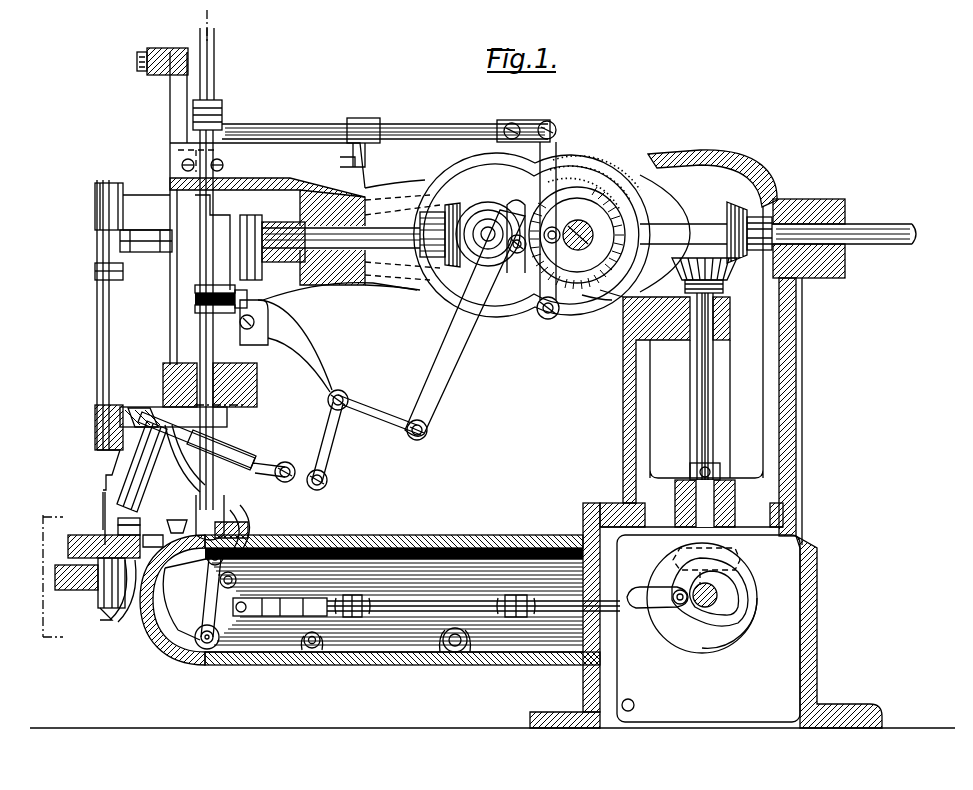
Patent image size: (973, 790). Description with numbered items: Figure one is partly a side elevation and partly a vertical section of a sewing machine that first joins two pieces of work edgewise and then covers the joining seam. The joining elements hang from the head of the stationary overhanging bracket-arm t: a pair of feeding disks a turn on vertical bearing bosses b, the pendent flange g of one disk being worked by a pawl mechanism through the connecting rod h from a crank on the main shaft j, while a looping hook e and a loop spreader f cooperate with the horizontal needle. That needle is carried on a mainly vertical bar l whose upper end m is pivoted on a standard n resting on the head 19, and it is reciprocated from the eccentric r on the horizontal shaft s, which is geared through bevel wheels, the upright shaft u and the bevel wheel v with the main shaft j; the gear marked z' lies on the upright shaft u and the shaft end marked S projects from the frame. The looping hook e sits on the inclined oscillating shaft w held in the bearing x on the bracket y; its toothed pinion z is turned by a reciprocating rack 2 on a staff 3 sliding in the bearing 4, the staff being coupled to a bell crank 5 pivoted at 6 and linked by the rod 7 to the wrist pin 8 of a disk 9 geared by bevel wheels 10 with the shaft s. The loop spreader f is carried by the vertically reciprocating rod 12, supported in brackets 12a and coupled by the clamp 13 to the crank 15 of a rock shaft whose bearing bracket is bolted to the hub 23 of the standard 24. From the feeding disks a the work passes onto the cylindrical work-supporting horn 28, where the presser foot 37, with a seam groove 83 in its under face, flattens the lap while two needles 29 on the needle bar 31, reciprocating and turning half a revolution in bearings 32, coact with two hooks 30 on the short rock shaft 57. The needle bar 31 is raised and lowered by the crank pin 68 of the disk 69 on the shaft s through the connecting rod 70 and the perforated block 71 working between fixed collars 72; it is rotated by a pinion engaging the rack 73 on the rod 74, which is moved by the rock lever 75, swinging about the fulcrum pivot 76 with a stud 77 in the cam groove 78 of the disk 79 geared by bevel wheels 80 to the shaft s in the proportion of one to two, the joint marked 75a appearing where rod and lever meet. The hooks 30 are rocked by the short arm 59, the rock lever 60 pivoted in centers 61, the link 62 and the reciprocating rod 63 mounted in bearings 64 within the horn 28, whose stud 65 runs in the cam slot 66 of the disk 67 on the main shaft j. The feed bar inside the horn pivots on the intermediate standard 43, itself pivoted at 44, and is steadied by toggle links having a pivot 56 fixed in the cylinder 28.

The reciprocating toothed rack 2 is at (95, 418).
The staff 3 is at (256, 459).
The bearing 4 is at (487, 267).
The bell crank 5 is at (343, 455).
The supporting pivot 6 is at (342, 394).
The rod 7 is at (447, 398).
The wrist pin 8 is at (514, 253).
The disk 9 is at (300, 285).
The bevel wheels 10 is at (447, 263).
The vertically reciprocating rod 12 is at (97, 352).
The brackets 12a is at (105, 193).
The clamp 13 is at (96, 275).
The crank 15 is at (165, 237).
The head 19 is at (100, 215).
The hub 23 is at (846, 270).
The stationary arm supporting standard 24 is at (802, 398).
The cylindrical work plate or work-supporting horn 28 is at (420, 536).
The vertically reciprocating needles 29 is at (218, 538).
The single thread chain stitch forming hooks 30 is at (246, 550).
The needle bar 31 is at (216, 63).
The bearings 32 is at (208, 197).
The presser foot 37 is at (179, 519).
The intermediate standard 43 is at (155, 539).
The pivot 44 is at (455, 655).
The pivot 56 is at (314, 652).
The short rock shaft 57 is at (168, 598).
The short arm 59 is at (237, 580).
The rock lever 60 is at (230, 604).
The centers 61 is at (207, 650).
The link 62 is at (262, 618).
The reciprocating rod 63 is at (428, 610).
The bearings 64 is at (355, 612).
The stud 65 is at (678, 602).
The cam slot 66 is at (738, 625).
The disk 67 is at (691, 624).
The crank pin 68 is at (235, 195).
The disk 69 is at (290, 290).
The connecting rod 70 is at (235, 255).
The perforated block 71 is at (196, 300).
The fixed collars 72 is at (196, 290).
The reciprocating toothed rack 73 is at (226, 128).
The reciprocating rod 74 is at (420, 127).
The rock lever 75 is at (590, 211).
The pivot 75a is at (527, 125).
The fulcrum pivot 76 is at (548, 320).
The stud 77 is at (585, 178).
The cam groove 78 is at (620, 205).
The disk 79 is at (590, 300).
The bevel wheels 80 is at (655, 212).
The groove 83 is at (240, 528).
The main shaft S is at (876, 233).
The feeding disks a is at (73, 560).
The vertical bearing bosses b is at (93, 540).
The looping hook e is at (126, 537).
The loop spreader f is at (103, 518).
The pendent flange g is at (70, 570).
The connecting rod h is at (117, 602).
The main shaft j is at (700, 605).
The mainly vertically ranging bar l is at (140, 75).
The upper end m is at (168, 52).
The standard n is at (172, 105).
The eccentric r is at (336, 188).
The horizontal shaft s is at (360, 229).
The stationary overhanging bracket-arm t is at (393, 190).
The upright shaft u is at (712, 410).
The bevel wheel v is at (758, 553).
The oscillating shaft w is at (163, 390).
The bearing x is at (142, 466).
The bracket y is at (185, 458).
The toothed pinion z is at (141, 403).
The bevel pinion z' is at (714, 277).